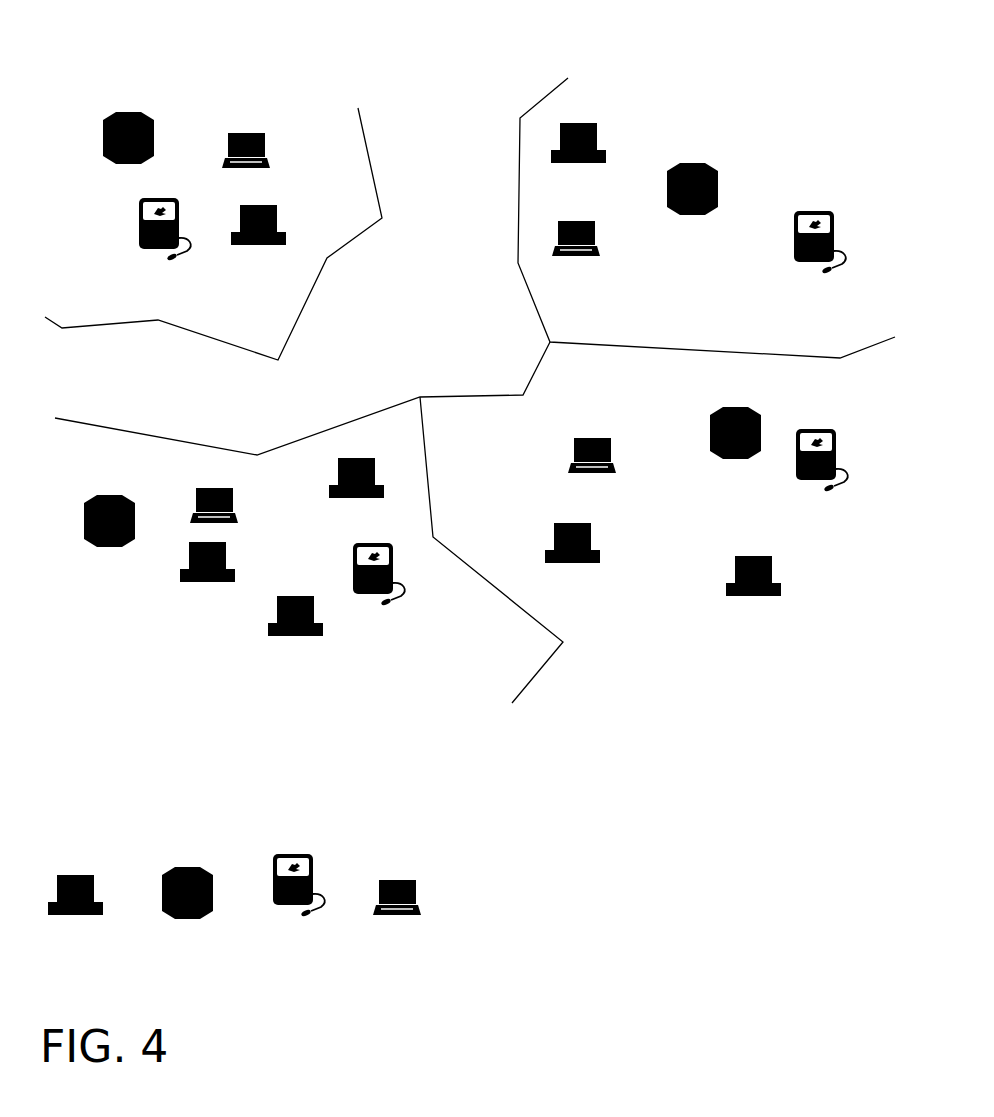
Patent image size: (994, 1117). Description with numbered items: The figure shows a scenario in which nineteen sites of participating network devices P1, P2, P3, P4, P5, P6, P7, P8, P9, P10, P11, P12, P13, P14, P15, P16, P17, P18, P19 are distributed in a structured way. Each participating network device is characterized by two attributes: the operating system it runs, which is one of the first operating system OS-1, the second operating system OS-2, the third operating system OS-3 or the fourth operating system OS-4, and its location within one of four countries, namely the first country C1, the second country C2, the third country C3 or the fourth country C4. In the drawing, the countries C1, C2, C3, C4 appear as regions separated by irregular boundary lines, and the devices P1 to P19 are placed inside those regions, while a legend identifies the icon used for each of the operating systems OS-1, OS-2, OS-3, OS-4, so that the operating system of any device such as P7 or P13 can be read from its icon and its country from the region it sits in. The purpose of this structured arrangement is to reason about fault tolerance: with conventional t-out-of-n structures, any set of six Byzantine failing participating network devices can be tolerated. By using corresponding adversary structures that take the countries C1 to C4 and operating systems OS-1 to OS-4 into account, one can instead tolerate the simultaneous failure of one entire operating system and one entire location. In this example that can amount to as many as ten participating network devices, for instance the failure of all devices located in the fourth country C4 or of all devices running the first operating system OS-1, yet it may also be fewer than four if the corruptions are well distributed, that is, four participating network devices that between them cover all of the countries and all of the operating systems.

The first country C1 is at (202, 77).
The second country C2 is at (760, 85).
The third country C3 is at (798, 673).
The fourth country C4 is at (163, 690).
The participating network device P1 is at (138, 248).
The participating network device P2 is at (260, 245).
The participating network device P3 is at (103, 153).
The participating network device P4 is at (270, 147).
The participating network device P5 is at (598, 137).
The participating network device P6 is at (577, 257).
The participating network device P7 is at (692, 215).
The participating network device P8 is at (793, 262).
The participating network device P9 is at (577, 563).
The participating network device P10 is at (753, 597).
The participating network device P11 is at (590, 438).
The participating network device P12 is at (717, 455).
The participating network device P13 is at (802, 478).
The participating network device P14 is at (392, 568).
The participating network device P15 is at (293, 635).
The participating network device P16 is at (337, 475).
The participating network device P17 is at (207, 582).
The participating network device P18 is at (197, 495).
The participating network device P19 is at (90, 542).
The first operating system OS-1 is at (79, 916).
The second operating system OS-2 is at (193, 912).
The third operating system OS-3 is at (303, 905).
The fourth operating system OS-4 is at (401, 919).